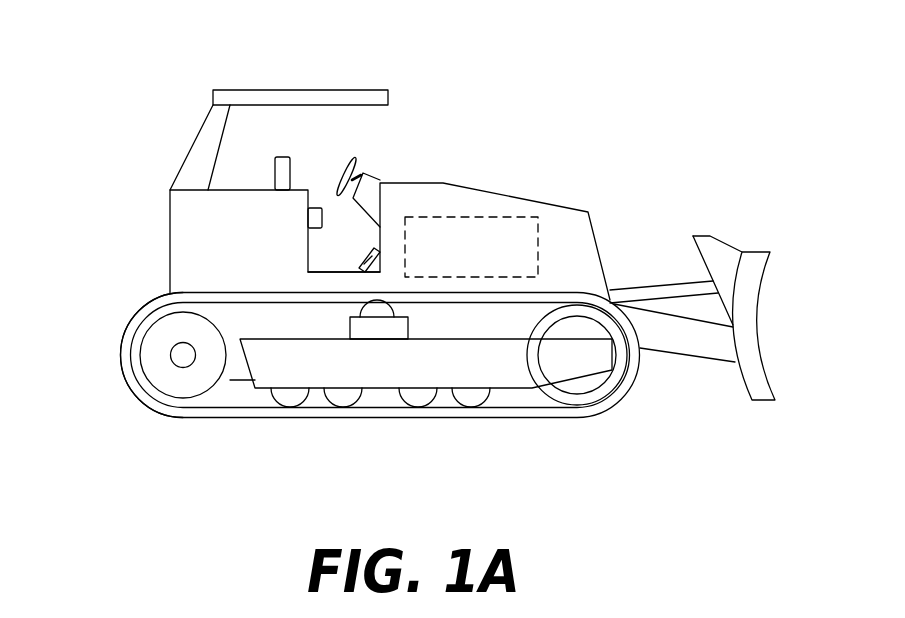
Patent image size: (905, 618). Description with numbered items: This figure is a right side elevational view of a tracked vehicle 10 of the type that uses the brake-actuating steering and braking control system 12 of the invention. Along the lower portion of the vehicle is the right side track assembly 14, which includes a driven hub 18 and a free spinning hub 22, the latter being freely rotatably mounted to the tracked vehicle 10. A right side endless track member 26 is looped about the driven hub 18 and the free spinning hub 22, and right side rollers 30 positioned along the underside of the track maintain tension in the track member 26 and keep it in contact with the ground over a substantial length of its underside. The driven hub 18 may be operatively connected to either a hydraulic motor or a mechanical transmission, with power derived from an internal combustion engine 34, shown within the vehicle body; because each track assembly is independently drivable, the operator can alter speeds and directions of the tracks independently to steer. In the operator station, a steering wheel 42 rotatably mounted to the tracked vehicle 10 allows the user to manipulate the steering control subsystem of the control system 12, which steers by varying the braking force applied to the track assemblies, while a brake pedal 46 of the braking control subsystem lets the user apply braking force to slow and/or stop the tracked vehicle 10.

The tracked vehicle 10 is at (196, 79).
The brake-actuating steering and braking control system 12 is at (414, 168).
The right side track assembly 14 is at (552, 418).
The driven hub 18 is at (598, 382).
The free spinning hub 22 is at (157, 350).
The right side endless track member 26 is at (128, 386).
The right side rollers 30 is at (377, 313).
The internal combustion engine 34 is at (532, 218).
The steering wheel 42 is at (352, 162).
The brake pedal 46 is at (362, 268).